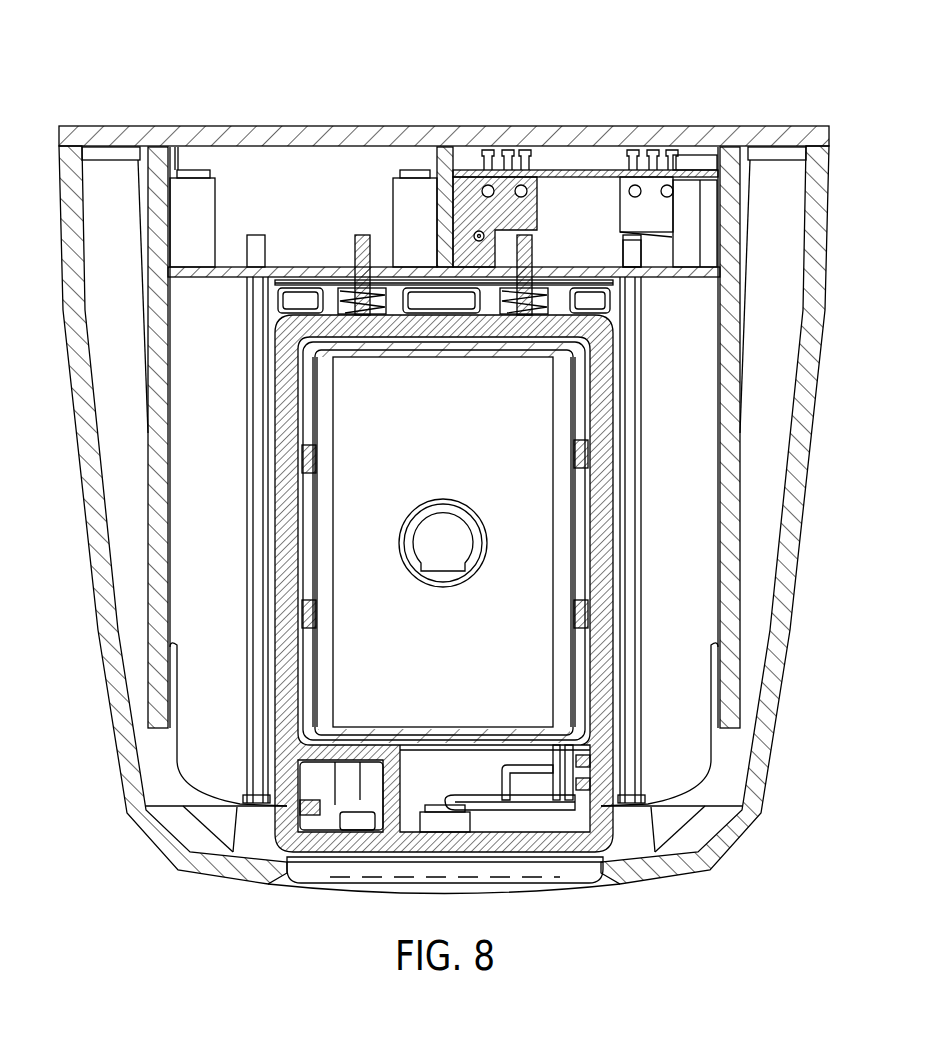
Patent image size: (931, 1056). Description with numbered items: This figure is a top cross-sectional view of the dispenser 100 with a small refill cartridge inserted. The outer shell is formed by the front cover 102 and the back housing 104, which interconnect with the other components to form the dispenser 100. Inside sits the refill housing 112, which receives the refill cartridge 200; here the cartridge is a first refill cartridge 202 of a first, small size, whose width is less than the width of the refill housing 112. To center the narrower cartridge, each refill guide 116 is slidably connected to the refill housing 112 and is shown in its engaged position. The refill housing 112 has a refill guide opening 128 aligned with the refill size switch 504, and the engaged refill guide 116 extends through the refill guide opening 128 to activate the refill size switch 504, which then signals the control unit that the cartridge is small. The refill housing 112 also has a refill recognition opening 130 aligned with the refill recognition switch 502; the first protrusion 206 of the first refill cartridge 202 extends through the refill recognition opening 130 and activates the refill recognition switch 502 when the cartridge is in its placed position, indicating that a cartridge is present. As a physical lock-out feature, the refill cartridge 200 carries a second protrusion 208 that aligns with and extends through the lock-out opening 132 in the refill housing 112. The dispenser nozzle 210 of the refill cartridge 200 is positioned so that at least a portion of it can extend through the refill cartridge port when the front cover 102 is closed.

The dispenser 100 is at (299, 76).
The front cover 102 is at (130, 793).
The back housing 104 is at (113, 126).
The refill housing 112 is at (153, 573).
The refill guide 116 is at (247, 436).
The refill guide opening 128 is at (627, 279).
The refill recognition opening 130 is at (535, 275).
The lock-out opening 132 is at (355, 270).
The refill cartridge 200 is at (486, 604).
The first refill cartridge 202 is at (600, 460).
The first protrusion 206 is at (536, 242).
The second protrusion 208 is at (362, 240).
The dispenser nozzle 210 is at (463, 872).
The refill recognition switch 502 is at (512, 185).
The refill size switch 504 is at (628, 183).